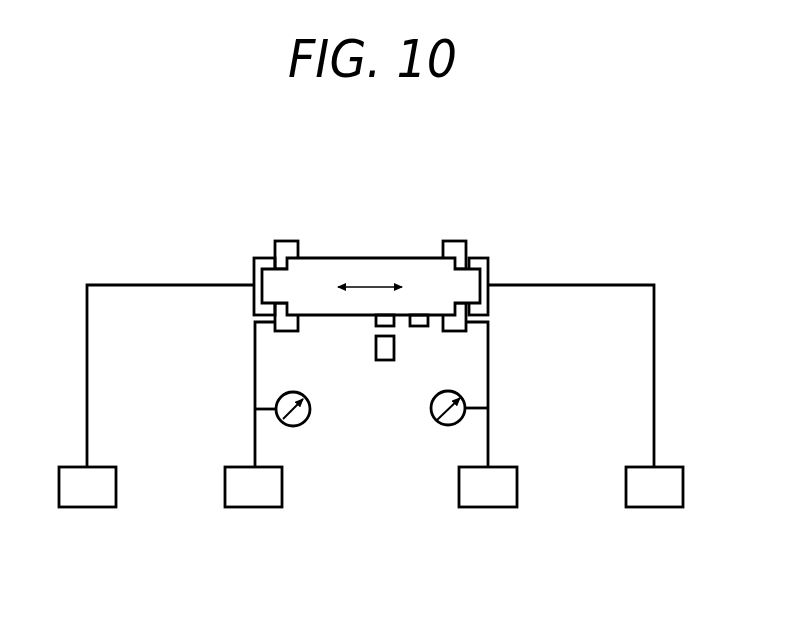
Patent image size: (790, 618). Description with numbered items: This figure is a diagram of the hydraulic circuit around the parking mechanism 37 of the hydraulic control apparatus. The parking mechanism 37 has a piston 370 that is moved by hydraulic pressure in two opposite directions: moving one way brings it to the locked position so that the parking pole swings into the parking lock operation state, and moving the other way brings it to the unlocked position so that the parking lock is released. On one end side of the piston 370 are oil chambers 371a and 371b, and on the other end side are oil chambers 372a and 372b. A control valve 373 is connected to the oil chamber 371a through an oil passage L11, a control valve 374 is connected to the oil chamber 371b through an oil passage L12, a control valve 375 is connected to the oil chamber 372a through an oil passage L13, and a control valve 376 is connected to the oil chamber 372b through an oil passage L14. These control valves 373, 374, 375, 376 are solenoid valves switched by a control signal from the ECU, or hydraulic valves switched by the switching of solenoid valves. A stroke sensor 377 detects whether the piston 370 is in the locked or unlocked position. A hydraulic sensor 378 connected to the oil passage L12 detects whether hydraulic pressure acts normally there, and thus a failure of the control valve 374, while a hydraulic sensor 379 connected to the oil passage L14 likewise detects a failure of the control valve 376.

The parking mechanism 37 is at (357, 250).
The piston 370 is at (357, 258).
The oil chamber 371a is at (258, 265).
The oil chamber 371b is at (285, 248).
The oil chamber 372a is at (488, 272).
The oil chamber 372b is at (455, 252).
The control valve 373 is at (79, 508).
The control valve 374 is at (247, 508).
The control valve 375 is at (658, 508).
The control valve 376 is at (485, 508).
The stroke sensor 377 is at (376, 350).
The hydraulic sensor 378 is at (310, 413).
The hydraulic sensor 379 is at (435, 415).
The oil passage L11 is at (87, 328).
The oil passage L12 is at (255, 347).
The oil passage L13 is at (654, 375).
The oil passage L14 is at (488, 353).